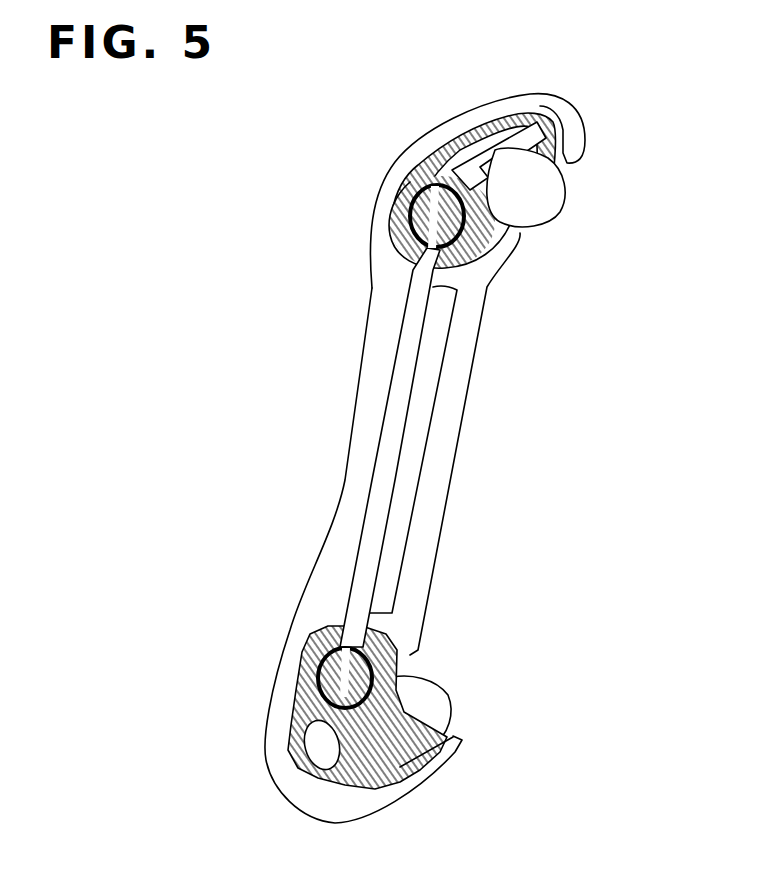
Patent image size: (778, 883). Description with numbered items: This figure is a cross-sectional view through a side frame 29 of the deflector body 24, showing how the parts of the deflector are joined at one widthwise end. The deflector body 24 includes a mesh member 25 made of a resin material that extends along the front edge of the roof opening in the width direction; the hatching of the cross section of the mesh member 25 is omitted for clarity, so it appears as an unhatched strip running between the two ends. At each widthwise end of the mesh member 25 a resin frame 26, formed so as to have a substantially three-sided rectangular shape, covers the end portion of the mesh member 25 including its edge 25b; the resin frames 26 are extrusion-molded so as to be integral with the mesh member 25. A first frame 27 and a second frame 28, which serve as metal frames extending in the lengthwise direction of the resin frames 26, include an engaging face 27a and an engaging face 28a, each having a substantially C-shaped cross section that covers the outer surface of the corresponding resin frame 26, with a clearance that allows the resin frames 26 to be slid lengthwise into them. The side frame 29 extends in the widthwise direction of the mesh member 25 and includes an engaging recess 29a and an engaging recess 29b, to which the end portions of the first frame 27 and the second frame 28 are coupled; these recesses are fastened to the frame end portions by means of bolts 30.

The deflector body 24 is at (588, 85).
The mesh member 25 is at (372, 477).
The edge 25b is at (438, 187).
The resin frame 26 is at (407, 225).
The first frame 27 is at (280, 745).
The engaging face 27a is at (290, 713).
The second frame 28 is at (420, 156).
The engaging face 28a is at (397, 187).
The side frame 29 is at (327, 533).
The engaging recess 29a is at (398, 778).
The engaging recess 29b is at (522, 114).
The bolt 30 is at (557, 190).